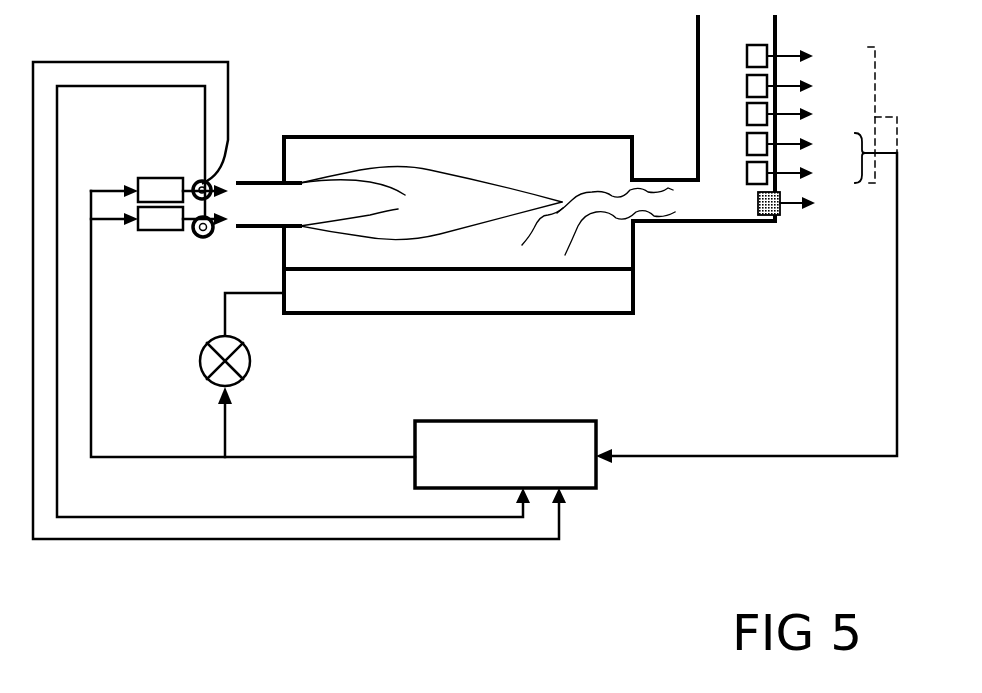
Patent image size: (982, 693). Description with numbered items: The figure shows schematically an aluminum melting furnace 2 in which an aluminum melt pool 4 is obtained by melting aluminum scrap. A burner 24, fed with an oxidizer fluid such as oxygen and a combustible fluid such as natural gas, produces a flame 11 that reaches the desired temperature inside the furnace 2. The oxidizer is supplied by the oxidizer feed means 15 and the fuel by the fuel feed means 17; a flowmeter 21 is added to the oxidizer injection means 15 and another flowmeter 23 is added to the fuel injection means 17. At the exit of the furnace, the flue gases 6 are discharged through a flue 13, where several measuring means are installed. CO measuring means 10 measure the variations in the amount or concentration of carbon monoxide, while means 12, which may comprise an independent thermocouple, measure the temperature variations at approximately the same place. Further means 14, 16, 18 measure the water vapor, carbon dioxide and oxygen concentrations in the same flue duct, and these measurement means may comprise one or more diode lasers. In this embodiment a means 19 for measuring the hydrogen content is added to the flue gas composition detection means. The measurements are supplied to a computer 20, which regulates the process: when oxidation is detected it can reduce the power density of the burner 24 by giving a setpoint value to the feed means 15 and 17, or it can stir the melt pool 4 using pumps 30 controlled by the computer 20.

The furnace 2 is at (515, 137).
The aluminum melt pool 4 is at (578, 295).
The flue gases 6 is at (650, 202).
The CO measuring means 10 is at (758, 200).
The flame 11 is at (480, 207).
The temperature measuring means 12 is at (747, 140).
The flue 13 is at (698, 105).
The water vapor measuring means 14 is at (747, 118).
The oxidizer feed means 15 is at (162, 185).
The carbon dioxide measuring means 16 is at (747, 82).
The fuel feed means 17 is at (165, 218).
The oxygen measuring means 18 is at (757, 45).
The H2 measuring means 19 is at (767, 218).
The computer 20 is at (483, 436).
The flowmeter 21 is at (293, 301).
The flowmeter 23 is at (299, 290).
The burner 24 is at (268, 183).
The pumps 30 is at (214, 358).